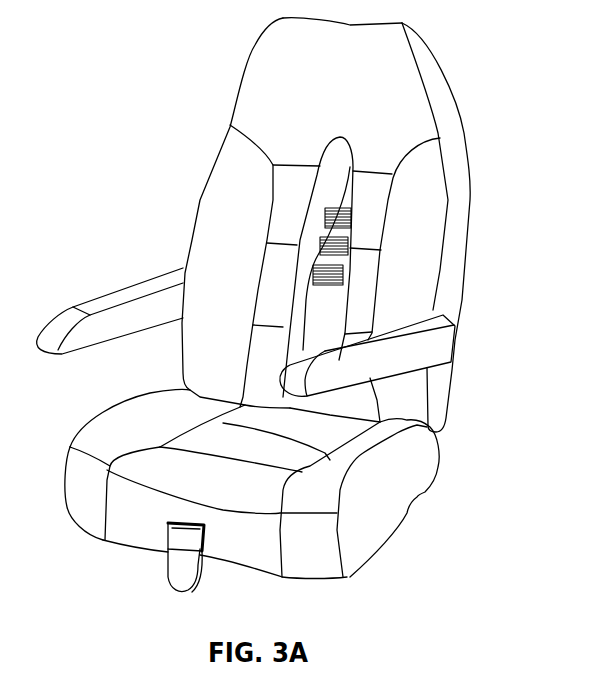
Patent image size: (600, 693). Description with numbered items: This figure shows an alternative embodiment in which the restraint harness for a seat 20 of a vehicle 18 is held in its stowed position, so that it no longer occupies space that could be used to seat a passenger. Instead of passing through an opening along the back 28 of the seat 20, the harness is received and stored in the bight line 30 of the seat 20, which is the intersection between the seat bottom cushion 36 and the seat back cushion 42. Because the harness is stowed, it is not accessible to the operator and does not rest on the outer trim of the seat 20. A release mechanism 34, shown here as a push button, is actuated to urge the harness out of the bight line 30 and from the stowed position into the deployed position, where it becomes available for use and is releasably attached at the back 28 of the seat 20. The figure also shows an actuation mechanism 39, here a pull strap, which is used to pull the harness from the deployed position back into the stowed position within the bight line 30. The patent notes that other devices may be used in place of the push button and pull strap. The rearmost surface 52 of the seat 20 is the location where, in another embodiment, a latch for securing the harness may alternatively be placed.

The vehicle 18 is at (215, 47).
The seat 20 is at (473, 212).
The back 28 is at (276, 70).
The bight line 30 is at (362, 419).
The release mechanism 34 is at (182, 537).
The seat bottom cushion 36 is at (158, 468).
The actuation mechanism 39 is at (187, 572).
The seat back cushion 42 is at (410, 85).
The rearmost surface 52 is at (417, 30).